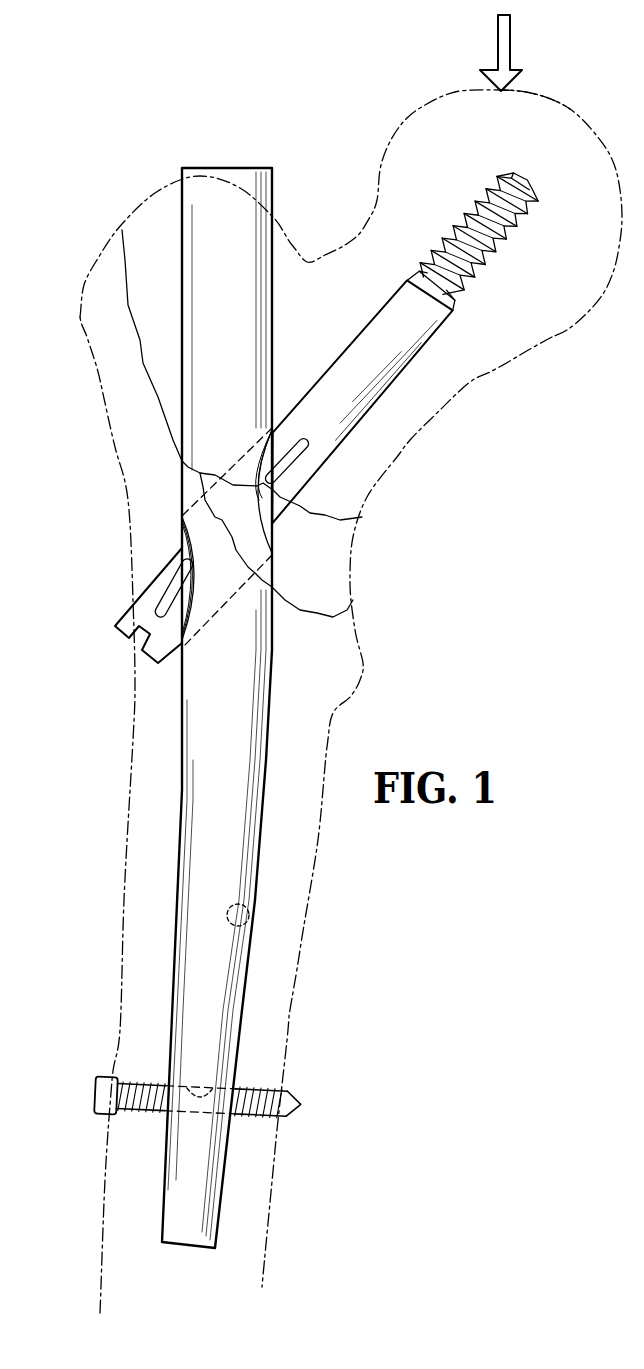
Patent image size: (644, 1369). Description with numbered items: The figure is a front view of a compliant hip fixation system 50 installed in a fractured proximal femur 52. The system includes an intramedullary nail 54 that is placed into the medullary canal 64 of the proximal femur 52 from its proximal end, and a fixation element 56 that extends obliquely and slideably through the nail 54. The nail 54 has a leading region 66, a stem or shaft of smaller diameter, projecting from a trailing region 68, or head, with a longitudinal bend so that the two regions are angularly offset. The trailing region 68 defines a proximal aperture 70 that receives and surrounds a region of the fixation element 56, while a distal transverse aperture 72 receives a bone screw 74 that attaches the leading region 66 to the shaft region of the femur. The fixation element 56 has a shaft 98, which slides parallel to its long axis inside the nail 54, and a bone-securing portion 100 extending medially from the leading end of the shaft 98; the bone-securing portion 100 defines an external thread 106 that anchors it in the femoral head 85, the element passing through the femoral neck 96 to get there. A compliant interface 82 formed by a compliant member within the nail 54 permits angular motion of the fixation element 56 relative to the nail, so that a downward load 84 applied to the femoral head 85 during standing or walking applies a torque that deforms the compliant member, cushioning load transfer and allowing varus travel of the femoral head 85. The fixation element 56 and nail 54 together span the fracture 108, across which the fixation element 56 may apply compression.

The hip fixation system 50 is at (150, 228).
The proximal femur 52 is at (112, 449).
The intramedullary nail 54 is at (280, 191).
The fixation element 56 is at (406, 343).
The medullary canal 64 is at (250, 905).
The leading region 66 is at (182, 888).
The trailing region 68 is at (182, 200).
The proximal aperture 70 is at (212, 607).
The distal transverse aperture 72 is at (212, 1086).
The bone screw 74 is at (94, 1094).
The compliant interface 82 is at (170, 531).
The load 84 is at (512, 42).
The femoral head 85 is at (537, 96).
The femoral neck 96 is at (470, 383).
The shaft 98 is at (348, 435).
The bone-securing portion 100 is at (478, 273).
The external thread 106 is at (503, 238).
The fracture 108 is at (349, 613).